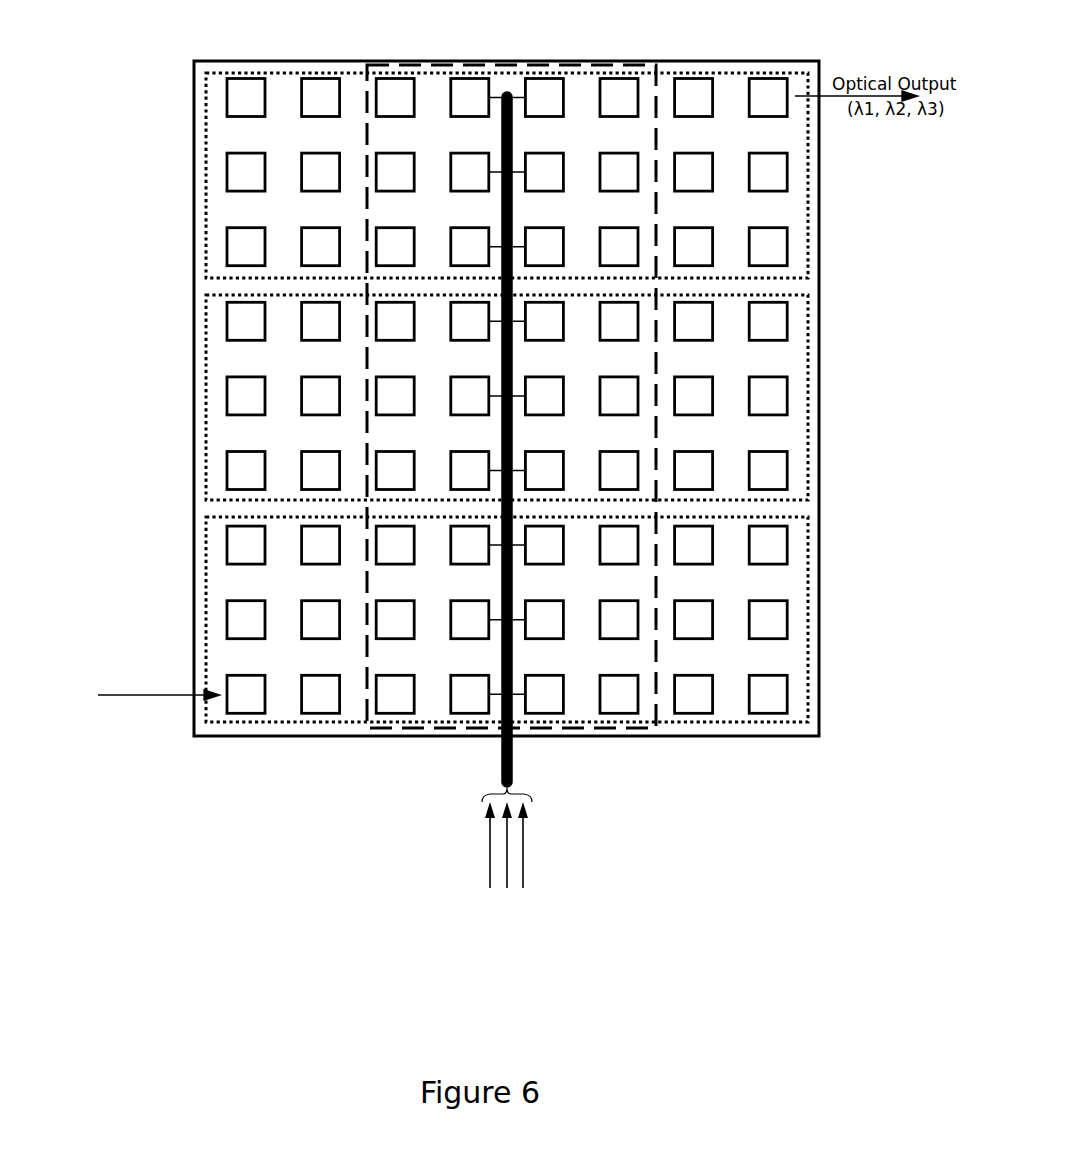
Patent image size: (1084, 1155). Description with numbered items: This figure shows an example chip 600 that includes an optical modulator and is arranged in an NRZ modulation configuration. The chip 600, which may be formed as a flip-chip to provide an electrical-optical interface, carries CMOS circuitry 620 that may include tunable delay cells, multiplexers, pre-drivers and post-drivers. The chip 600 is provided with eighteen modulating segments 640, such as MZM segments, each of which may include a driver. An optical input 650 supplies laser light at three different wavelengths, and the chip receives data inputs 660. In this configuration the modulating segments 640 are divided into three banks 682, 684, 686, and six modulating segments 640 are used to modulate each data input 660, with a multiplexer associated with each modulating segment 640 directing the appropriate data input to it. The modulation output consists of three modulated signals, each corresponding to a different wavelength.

The chip 600 is at (144, 111).
The CMOS circuitry 620 is at (367, 185).
The modulating segment 640 is at (396, 713).
The optical input 650 is at (112, 742).
The data input 660 is at (452, 850).
The bank 682 is at (808, 633).
The bank 684 is at (808, 418).
The bank 686 is at (808, 202).